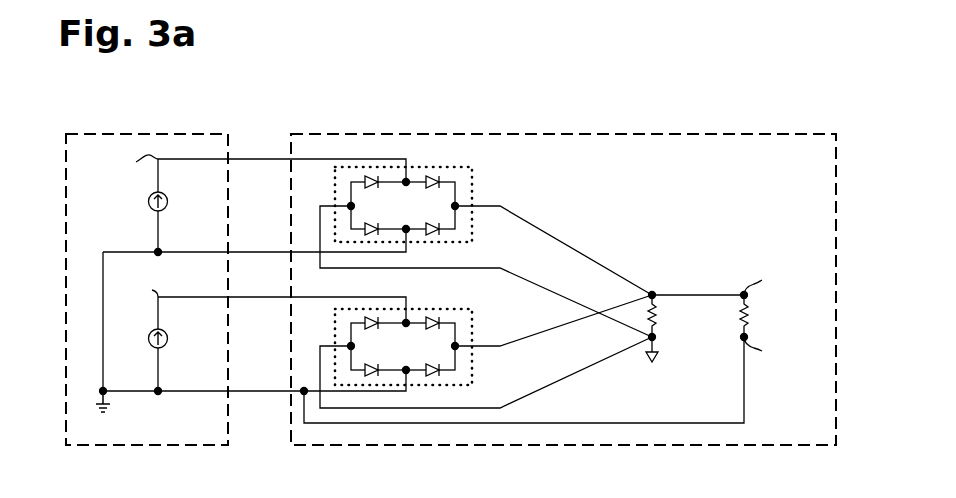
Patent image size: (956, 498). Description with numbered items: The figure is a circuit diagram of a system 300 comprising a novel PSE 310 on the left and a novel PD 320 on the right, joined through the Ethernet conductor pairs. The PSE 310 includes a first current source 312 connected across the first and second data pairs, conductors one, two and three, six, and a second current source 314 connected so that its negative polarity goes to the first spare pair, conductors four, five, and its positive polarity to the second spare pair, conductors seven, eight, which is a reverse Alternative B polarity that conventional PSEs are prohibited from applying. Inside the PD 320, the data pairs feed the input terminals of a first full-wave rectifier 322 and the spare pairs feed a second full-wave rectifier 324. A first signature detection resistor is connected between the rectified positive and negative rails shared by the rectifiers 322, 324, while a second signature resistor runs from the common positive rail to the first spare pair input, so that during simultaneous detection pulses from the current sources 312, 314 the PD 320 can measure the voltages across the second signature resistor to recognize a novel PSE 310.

The system 300 is at (648, 125).
The PSE 310 is at (228, 134).
The first current source 312 is at (149, 201).
The second current source 314 is at (167, 330).
The PD 320 is at (447, 134).
The first full-wave rectifier 322 is at (472, 166).
The second full-wave rectifier 324 is at (472, 308).